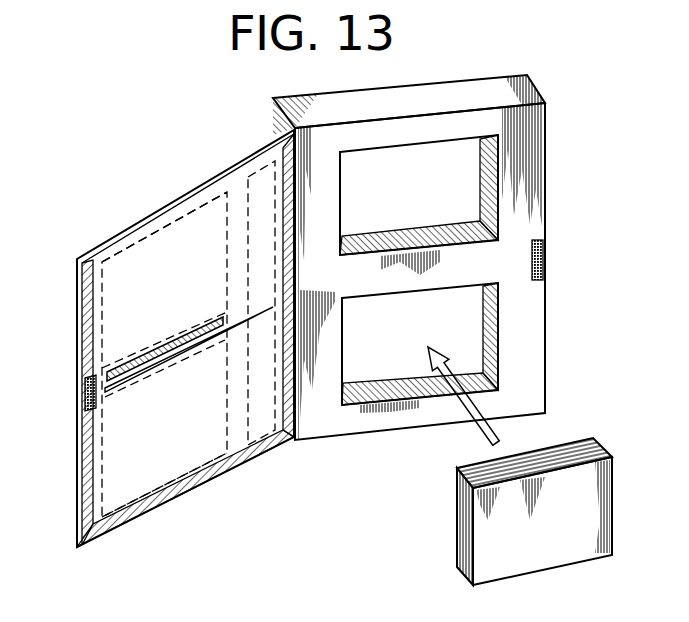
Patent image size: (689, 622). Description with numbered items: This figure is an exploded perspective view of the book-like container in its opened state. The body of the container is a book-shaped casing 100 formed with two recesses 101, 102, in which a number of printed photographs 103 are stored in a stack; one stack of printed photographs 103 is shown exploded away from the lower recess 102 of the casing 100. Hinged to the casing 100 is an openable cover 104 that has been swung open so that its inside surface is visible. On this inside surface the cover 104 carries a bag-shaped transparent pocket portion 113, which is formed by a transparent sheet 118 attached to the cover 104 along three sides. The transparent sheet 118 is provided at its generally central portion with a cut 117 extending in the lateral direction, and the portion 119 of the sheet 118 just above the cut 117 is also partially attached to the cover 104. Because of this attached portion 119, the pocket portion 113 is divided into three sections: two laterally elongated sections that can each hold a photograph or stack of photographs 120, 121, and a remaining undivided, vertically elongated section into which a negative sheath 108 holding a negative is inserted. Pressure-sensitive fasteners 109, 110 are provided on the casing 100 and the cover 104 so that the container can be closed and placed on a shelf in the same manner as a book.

The casing 100 is at (499, 100).
The recess 101 is at (470, 173).
The recess 102 is at (472, 340).
The printed photographs 103 is at (578, 493).
The cover 104 is at (181, 194).
The negative sheath 108 is at (257, 415).
The pressure-sensitive fastener 109 is at (544, 262).
The pressure-sensitive fastener 110 is at (97, 395).
The pocket portion 113 is at (232, 175).
The cut 117 is at (198, 342).
The transparent sheet 118 is at (120, 287).
The attached portion 119 is at (151, 358).
The photographs 120 is at (130, 327).
The photographs 121 is at (132, 458).